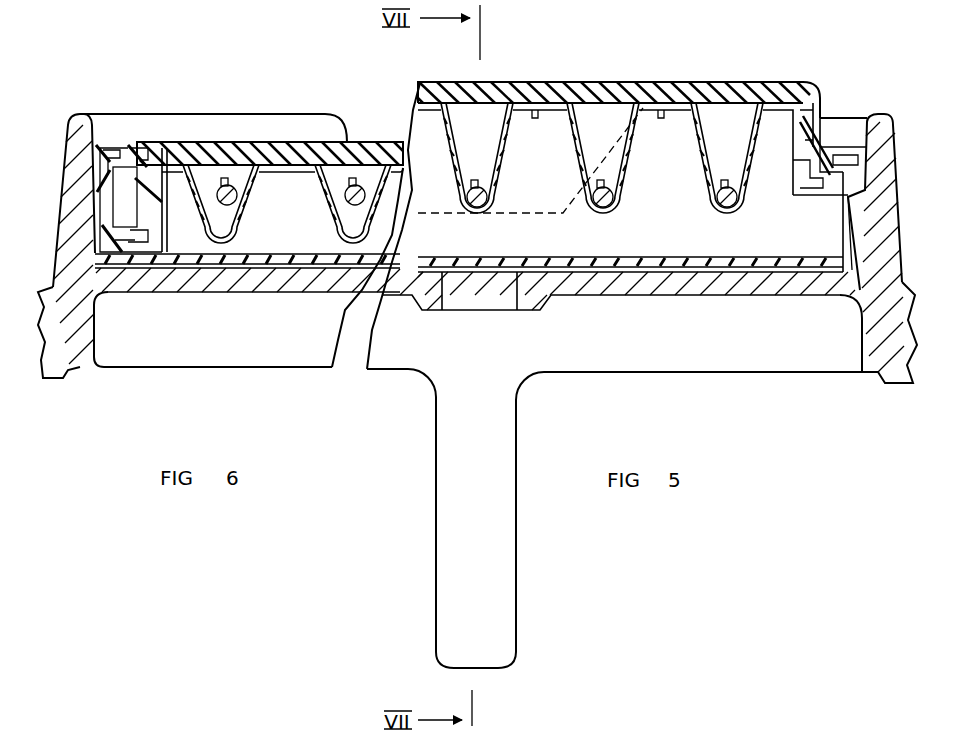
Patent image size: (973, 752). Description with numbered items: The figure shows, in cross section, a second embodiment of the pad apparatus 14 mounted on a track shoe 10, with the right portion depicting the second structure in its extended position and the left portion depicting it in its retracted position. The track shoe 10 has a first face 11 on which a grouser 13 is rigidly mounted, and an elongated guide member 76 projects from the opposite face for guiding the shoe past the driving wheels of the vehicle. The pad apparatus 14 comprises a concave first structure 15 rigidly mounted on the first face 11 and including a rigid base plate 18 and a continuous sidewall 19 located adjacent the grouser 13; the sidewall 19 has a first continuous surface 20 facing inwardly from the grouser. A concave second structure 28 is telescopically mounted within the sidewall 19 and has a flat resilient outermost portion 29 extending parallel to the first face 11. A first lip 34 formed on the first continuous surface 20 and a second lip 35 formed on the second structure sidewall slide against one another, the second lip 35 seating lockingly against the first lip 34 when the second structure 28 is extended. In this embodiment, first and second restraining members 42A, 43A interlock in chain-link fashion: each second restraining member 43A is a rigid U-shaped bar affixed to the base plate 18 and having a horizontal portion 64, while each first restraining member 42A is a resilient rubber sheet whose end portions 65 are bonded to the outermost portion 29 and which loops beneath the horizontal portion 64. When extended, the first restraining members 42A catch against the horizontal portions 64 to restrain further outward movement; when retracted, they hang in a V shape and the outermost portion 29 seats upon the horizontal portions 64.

In FIG. 6, the track shoe 10 is at (230, 370).
In FIG. 5, the track shoe 10 is at (700, 374).
In FIG. 6, the first face 11 is at (187, 262).
In FIG. 5, the first face 11 is at (680, 272).
In FIG. 6, the grouser 13 is at (88, 116).
In FIG. 5, the grouser 13 is at (877, 117).
In FIG. 6, the pad apparatus 14 is at (173, 139).
In FIG. 5, the pad apparatus 14 is at (518, 80).
In FIG. 5, the first structure 15 is at (851, 143).
In FIG. 5, the base plate 18 is at (605, 257).
In FIG. 5, the sidewall 19 is at (853, 197).
In FIG. 5, the first continuous surface 20 is at (843, 227).
In FIG. 6, the second structure 28 is at (263, 139).
In FIG. 5, the second structure 28 is at (740, 80).
In FIG. 6, the outermost portion 29 is at (372, 142).
In FIG. 5, the outermost portion 29 is at (648, 102).
In FIG. 5, the first lip 34 is at (822, 147).
In FIG. 5, the second lip 35 is at (840, 197).
In FIG. 6, the first restraining members 42A is at (337, 211).
In FIG. 5, the first restraining members 42A is at (497, 187).
In FIG. 6, the second restraining members 43A is at (233, 206).
In FIG. 5, the second restraining members 43A is at (482, 180).
In FIG. 6, the horizontal portion 64 is at (218, 203).
In FIG. 5, the horizontal portion 64 is at (597, 178).
In FIG. 5, the end portions 65 is at (652, 112).
In FIG. 5, the guide member 76 is at (436, 558).